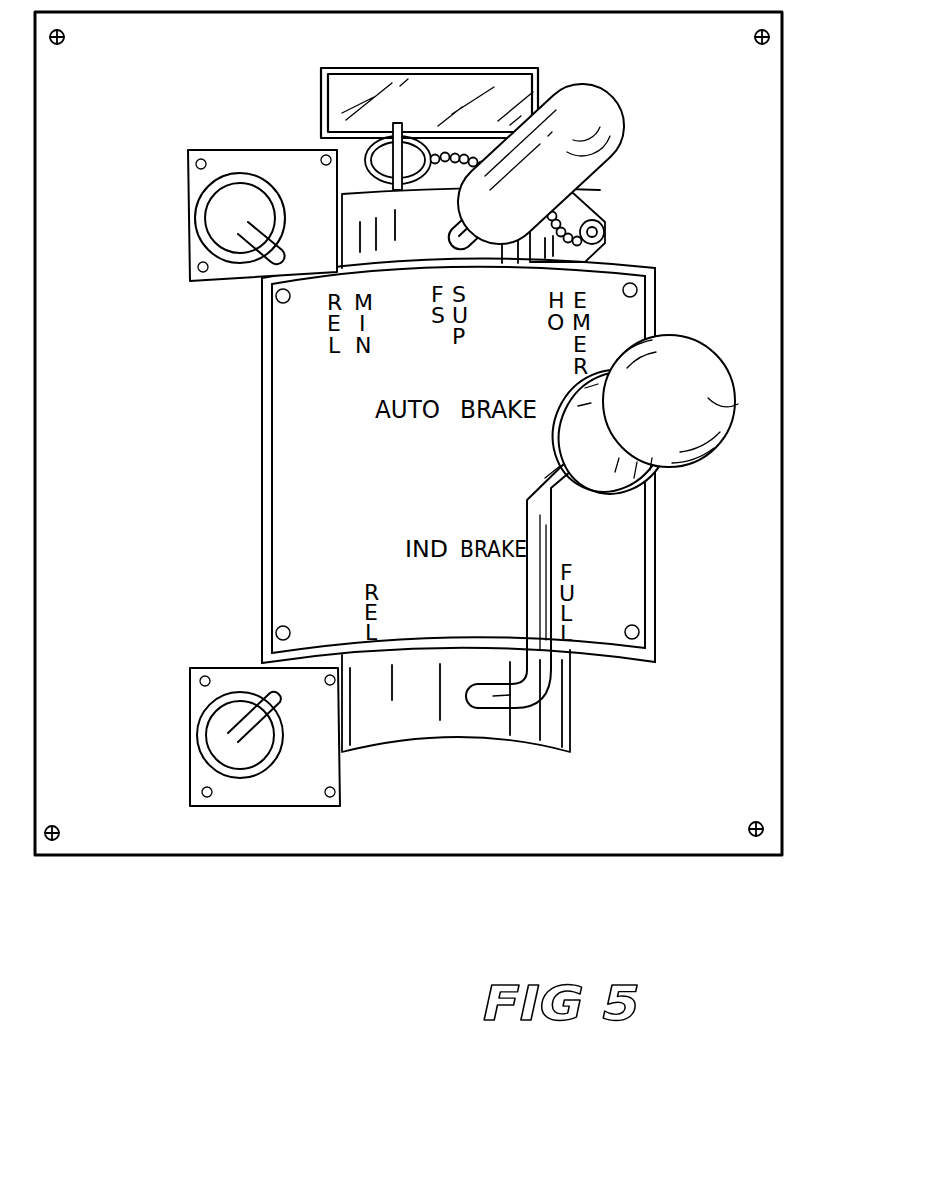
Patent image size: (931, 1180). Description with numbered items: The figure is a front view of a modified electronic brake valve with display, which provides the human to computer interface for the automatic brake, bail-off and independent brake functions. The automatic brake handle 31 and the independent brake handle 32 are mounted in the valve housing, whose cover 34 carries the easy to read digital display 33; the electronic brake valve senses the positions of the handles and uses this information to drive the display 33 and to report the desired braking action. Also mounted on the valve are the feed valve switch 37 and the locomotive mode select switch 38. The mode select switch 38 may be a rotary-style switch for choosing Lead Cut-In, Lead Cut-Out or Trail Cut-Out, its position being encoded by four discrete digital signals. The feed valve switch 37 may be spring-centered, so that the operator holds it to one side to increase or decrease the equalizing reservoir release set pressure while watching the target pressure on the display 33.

The automatic brake handle 31 is at (603, 163).
The independent brake handle 32 is at (712, 402).
The display 33 is at (467, 73).
The cover 34 is at (742, 692).
The feed valve switch 37 is at (242, 195).
The locomotive mode select switch 38 is at (218, 728).